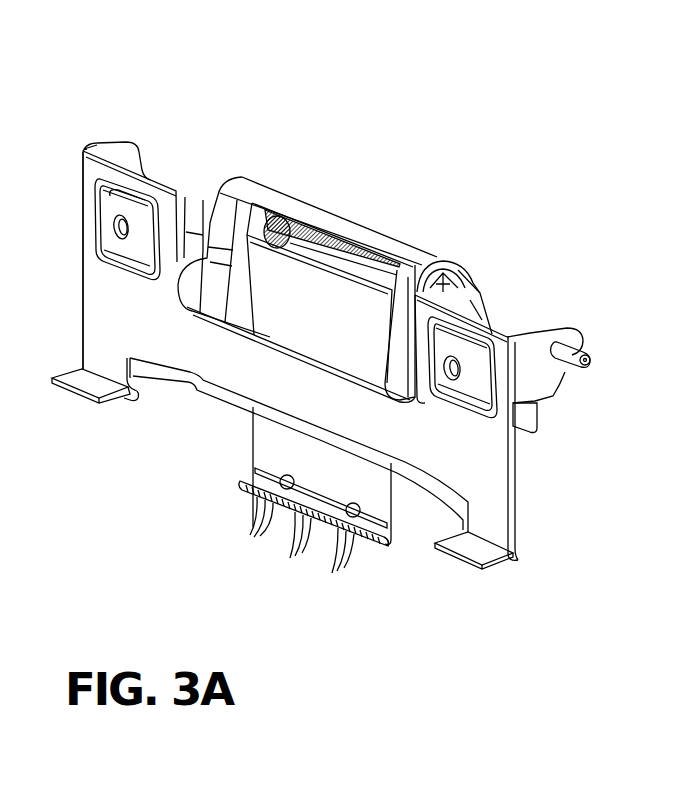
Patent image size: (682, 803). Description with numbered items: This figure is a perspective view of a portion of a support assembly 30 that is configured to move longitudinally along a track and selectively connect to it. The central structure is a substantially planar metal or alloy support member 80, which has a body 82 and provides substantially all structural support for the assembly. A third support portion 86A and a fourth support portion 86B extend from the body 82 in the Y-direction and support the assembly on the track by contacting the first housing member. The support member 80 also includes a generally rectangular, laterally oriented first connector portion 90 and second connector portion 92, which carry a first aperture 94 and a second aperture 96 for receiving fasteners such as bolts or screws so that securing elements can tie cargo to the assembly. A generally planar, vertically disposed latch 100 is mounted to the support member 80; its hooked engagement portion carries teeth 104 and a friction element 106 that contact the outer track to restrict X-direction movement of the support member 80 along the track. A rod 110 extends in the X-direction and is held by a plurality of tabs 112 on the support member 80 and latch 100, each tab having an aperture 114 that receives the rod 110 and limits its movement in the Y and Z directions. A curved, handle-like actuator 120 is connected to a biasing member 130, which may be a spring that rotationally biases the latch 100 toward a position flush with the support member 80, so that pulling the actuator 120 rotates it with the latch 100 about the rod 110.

The support assembly 30 is at (428, 140).
The support member 80 is at (62, 207).
The body 82 is at (293, 383).
The third support portion 86A is at (480, 555).
The fourth support portion 86B is at (88, 390).
The first connector portion 90 is at (463, 333).
The second connector portion 92 is at (127, 197).
The first aperture 94 is at (460, 367).
The second aperture 96 is at (128, 225).
The latch 100 is at (368, 489).
The teeth 104 is at (340, 553).
The friction element 106 is at (390, 545).
The rod 110 is at (477, 315).
The tabs 112 is at (110, 148).
The apertures 114 is at (132, 150).
The actuator 120 is at (343, 217).
The biasing member 130 is at (290, 205).